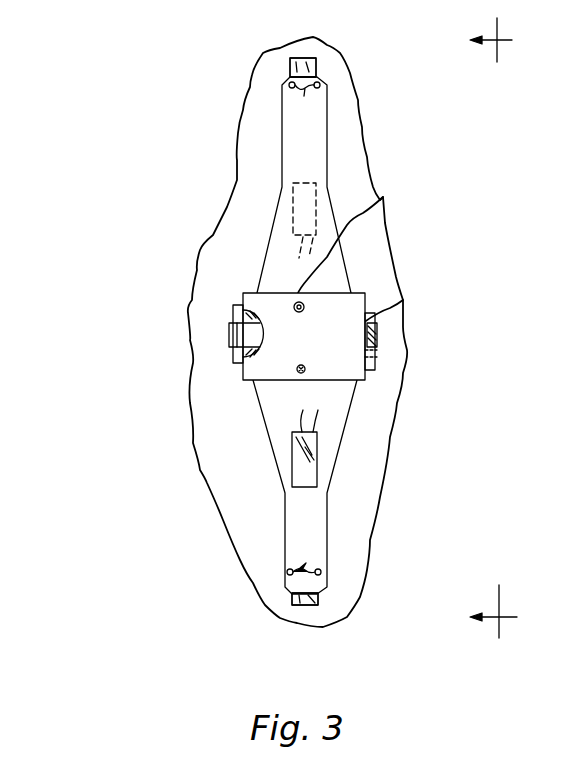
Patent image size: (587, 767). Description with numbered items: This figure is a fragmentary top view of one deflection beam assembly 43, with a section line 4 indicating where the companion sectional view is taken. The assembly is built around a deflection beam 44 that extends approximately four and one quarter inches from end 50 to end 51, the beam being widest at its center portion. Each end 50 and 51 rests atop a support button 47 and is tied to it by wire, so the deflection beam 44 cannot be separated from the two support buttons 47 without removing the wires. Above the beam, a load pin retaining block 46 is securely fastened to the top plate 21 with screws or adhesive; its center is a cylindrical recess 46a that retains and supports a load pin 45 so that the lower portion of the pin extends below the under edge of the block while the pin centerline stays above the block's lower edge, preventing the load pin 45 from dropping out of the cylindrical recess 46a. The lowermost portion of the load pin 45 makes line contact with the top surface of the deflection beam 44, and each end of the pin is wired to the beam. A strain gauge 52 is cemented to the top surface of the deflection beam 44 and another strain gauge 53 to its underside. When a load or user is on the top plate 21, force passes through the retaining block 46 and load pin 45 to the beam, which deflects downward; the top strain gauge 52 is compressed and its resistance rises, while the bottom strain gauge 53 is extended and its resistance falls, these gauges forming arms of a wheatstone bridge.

The top plate 21 is at (373, 267).
The deflection beam assembly 43 is at (155, 127).
The deflection beam 44 is at (260, 417).
The load pin 45 is at (229, 333).
The load pin retaining block 46 is at (276, 293).
The cylindrical recess 46a is at (237, 313).
The support button 47 is at (292, 58).
The end 50 is at (317, 605).
The end 51 is at (315, 66).
The strain gauge 52 is at (300, 470).
The strain gauge 53 is at (317, 183).
The section line 4- 4 is at (494, 330).